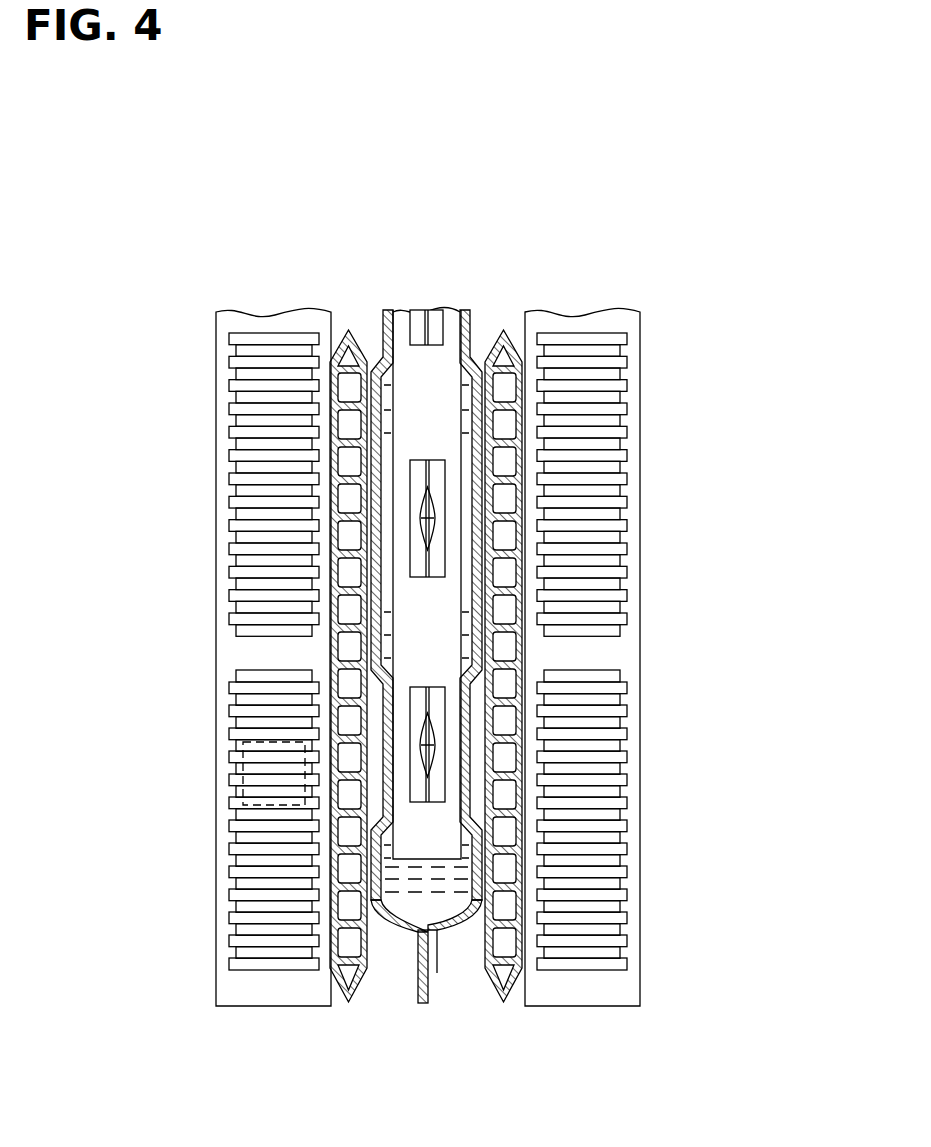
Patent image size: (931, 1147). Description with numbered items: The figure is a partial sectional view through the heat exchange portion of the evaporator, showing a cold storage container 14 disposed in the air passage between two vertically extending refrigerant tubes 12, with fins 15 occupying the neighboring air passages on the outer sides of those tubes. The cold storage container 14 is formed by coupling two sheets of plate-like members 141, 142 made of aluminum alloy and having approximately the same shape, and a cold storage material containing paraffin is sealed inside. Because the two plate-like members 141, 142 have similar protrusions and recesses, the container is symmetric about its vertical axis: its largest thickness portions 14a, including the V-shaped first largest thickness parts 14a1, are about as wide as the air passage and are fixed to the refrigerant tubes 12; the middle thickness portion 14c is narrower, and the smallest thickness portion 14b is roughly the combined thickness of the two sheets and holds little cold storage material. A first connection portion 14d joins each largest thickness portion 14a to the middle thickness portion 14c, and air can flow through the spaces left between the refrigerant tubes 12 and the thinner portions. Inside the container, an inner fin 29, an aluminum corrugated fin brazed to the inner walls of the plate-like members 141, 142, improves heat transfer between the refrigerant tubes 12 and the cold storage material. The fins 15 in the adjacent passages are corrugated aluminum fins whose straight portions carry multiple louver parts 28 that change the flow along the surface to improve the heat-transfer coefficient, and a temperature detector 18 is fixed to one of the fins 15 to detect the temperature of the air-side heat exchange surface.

The refrigerant tube 12 is at (349, 322).
The cold storage container 14 is at (587, 662).
The largest thickness portion 14a is at (598, 604).
The first largest thickness part 14a1 is at (486, 640).
The smallest thickness portion 14b is at (418, 952).
The middle thickness portion 14c is at (450, 746).
The first connection portion 14d is at (468, 690).
The plate-like member 141 is at (405, 925).
The plate-like member 142 is at (445, 925).
The fin 15 is at (265, 327).
The temperature detector 18 is at (257, 788).
The louver part 28 is at (252, 456).
The inner fin 29 is at (447, 310).